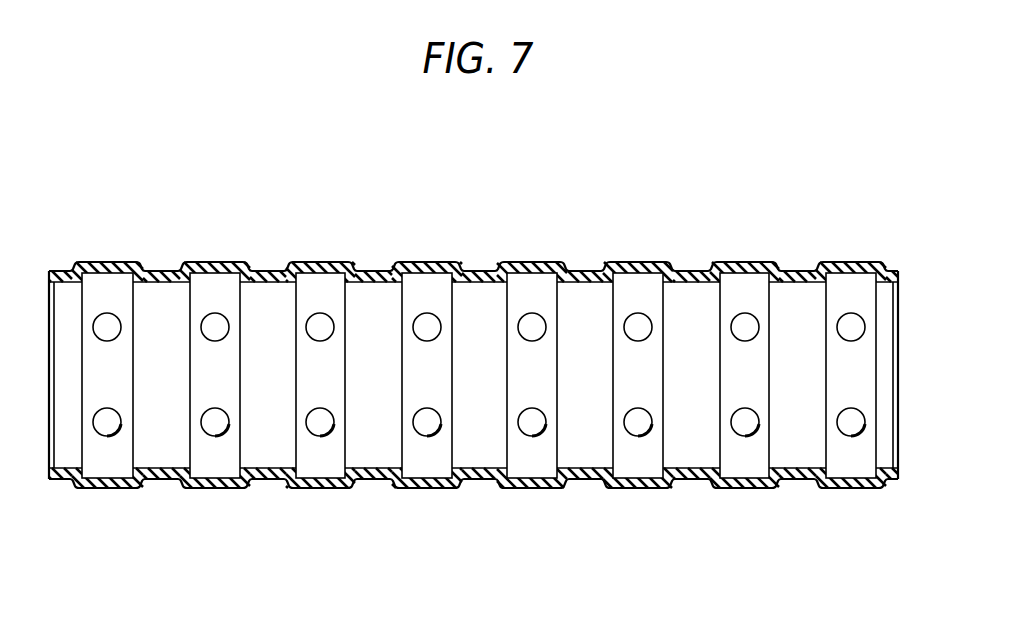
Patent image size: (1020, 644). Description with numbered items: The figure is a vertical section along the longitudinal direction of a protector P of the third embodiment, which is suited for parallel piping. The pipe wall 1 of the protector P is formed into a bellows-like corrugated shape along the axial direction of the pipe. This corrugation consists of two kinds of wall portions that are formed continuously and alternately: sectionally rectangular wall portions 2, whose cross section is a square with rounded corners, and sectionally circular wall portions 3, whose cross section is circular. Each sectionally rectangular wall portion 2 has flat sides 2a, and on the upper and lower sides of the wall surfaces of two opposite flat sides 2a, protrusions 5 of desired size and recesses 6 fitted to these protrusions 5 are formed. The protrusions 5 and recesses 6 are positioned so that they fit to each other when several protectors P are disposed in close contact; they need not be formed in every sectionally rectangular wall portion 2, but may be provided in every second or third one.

The protector P is at (163, 247).
The pipe wall 1 is at (515, 267).
The sectionally rectangular wall portion 2 is at (750, 265).
The flat side 2a is at (217, 285).
The sectionally circular wall portion 3 is at (590, 273).
The protrusion 5 is at (322, 325).
The recess 6 is at (322, 425).